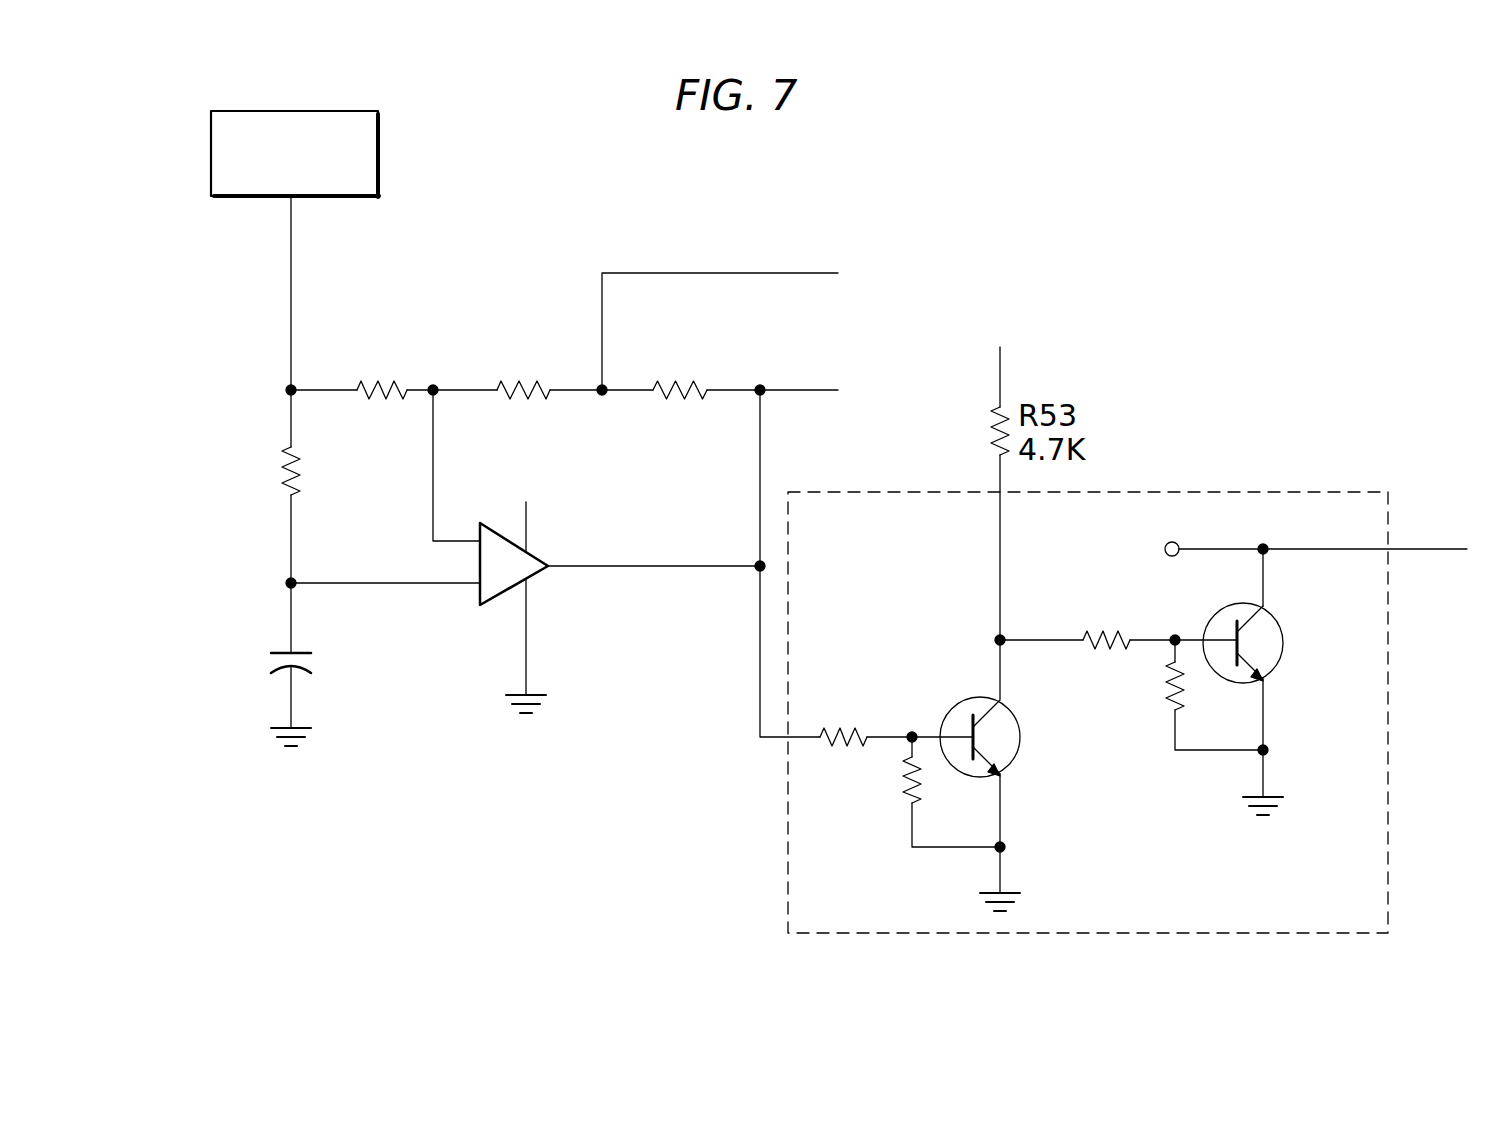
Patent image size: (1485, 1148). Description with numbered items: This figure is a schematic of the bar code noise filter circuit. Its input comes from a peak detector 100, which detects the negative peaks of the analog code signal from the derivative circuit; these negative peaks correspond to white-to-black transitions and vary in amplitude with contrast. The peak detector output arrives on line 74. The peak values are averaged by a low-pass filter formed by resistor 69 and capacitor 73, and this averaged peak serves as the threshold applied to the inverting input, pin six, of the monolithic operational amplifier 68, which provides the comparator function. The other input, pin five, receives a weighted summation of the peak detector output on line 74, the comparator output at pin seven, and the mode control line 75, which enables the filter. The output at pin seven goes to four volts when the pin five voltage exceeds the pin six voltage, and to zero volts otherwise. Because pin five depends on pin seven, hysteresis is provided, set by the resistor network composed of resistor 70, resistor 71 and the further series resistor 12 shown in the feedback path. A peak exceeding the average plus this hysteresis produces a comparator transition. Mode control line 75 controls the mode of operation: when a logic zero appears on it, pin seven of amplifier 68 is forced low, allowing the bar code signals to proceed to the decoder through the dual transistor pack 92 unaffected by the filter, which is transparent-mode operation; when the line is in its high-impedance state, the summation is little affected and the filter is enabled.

The peak detector 100 is at (320, 111).
The line 74 is at (292, 243).
The mode control line 75 is at (690, 272).
The resistor 70 is at (362, 396).
The resistor 71 is at (514, 399).
The resistor R74 12 is at (677, 399).
The resistor 69 is at (279, 469).
The capacitor 73 is at (272, 661).
The monolithic operational amplifier 68 is at (482, 605).
The dual transistor pack 92 is at (786, 853).